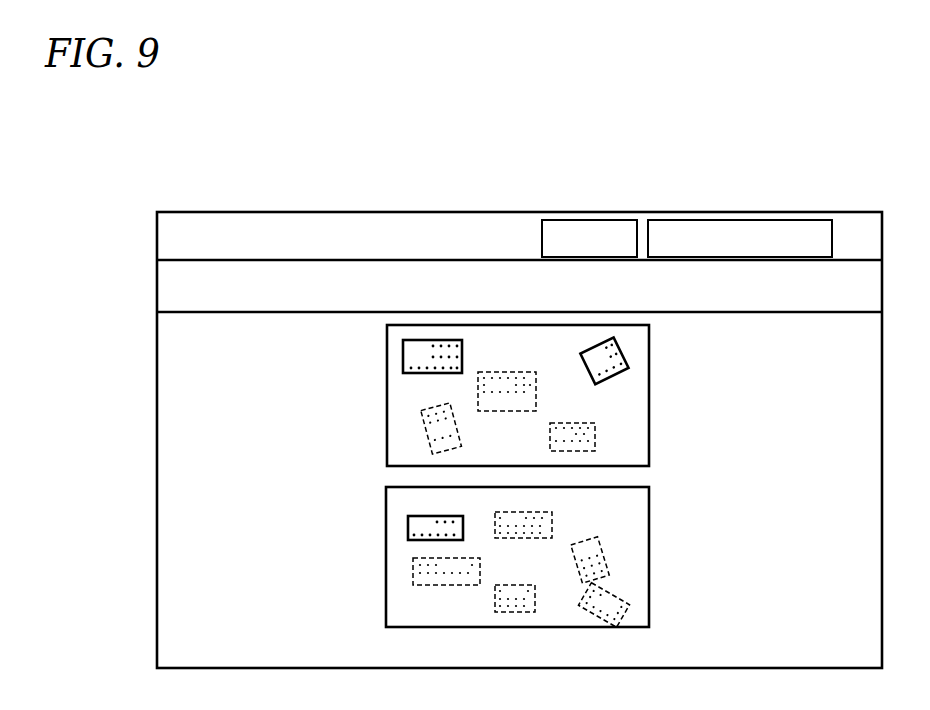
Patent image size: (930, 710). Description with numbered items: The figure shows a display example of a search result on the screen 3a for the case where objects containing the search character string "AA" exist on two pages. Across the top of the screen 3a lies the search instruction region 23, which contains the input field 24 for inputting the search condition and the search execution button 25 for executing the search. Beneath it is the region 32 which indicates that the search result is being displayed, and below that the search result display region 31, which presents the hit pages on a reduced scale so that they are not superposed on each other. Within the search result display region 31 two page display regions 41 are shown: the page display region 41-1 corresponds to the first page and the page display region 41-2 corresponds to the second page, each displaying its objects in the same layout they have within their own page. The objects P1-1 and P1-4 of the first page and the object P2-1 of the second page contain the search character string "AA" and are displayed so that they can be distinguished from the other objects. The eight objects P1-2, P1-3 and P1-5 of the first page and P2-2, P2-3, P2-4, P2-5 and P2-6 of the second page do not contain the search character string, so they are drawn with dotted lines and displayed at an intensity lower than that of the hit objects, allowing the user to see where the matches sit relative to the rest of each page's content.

The screen 3a is at (361, 212).
The search instruction region 23 is at (158, 240).
The input field 24 is at (818, 220).
The search execution button 25 is at (592, 220).
The search result display region 31 is at (158, 452).
The region which indicates the display of the search result 32 is at (158, 290).
The page display region 41 is at (730, 434).
The page display region 41-1 is at (649, 437).
The page display region 41-2 is at (649, 521).
The object P1-1 is at (403, 352).
The object P1-2 is at (426, 432).
The object P1-3 is at (478, 390).
The object P1-4 is at (622, 352).
The object P1-5 is at (595, 428).
The object P2-1 is at (408, 522).
The object P2-2 is at (413, 570).
The object P2-3 is at (495, 512).
The object P2-4 is at (495, 592).
The object P2-5 is at (596, 540).
The object P2-6 is at (598, 586).